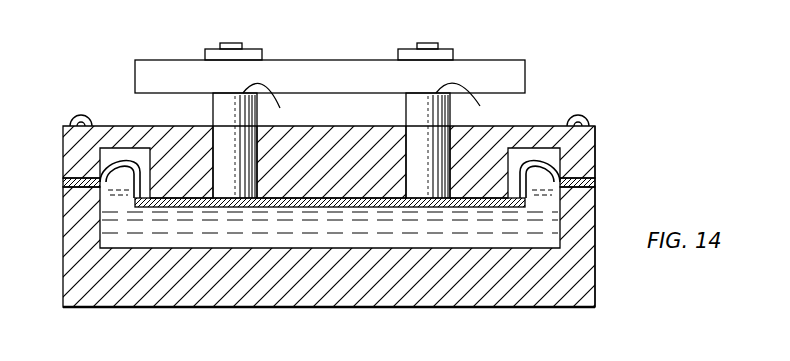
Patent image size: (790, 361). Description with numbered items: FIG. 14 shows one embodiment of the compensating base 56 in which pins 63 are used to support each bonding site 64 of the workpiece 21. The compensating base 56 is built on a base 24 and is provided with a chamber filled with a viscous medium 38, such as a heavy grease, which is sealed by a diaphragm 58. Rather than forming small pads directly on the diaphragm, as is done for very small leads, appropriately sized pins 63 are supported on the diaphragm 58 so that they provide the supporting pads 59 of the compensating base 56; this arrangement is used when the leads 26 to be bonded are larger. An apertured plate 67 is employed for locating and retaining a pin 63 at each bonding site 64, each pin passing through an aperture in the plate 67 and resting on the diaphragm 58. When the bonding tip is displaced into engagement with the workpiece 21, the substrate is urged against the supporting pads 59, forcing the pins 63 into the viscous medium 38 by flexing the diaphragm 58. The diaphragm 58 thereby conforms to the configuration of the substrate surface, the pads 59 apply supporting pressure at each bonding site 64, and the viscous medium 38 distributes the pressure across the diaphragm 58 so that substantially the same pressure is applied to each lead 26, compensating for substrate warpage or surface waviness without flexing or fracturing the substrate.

The workpiece 21 is at (296, 55).
The base 24 is at (583, 287).
The lead 26 is at (236, 43).
The viscous medium 38 is at (113, 228).
The compensating base 56 is at (638, 216).
The diaphragm 58 is at (368, 208).
The supporting pad 59 is at (376, 103).
The pin 63 is at (222, 113).
The bonding site 64 is at (337, 31).
The apertured plate 67 is at (80, 148).